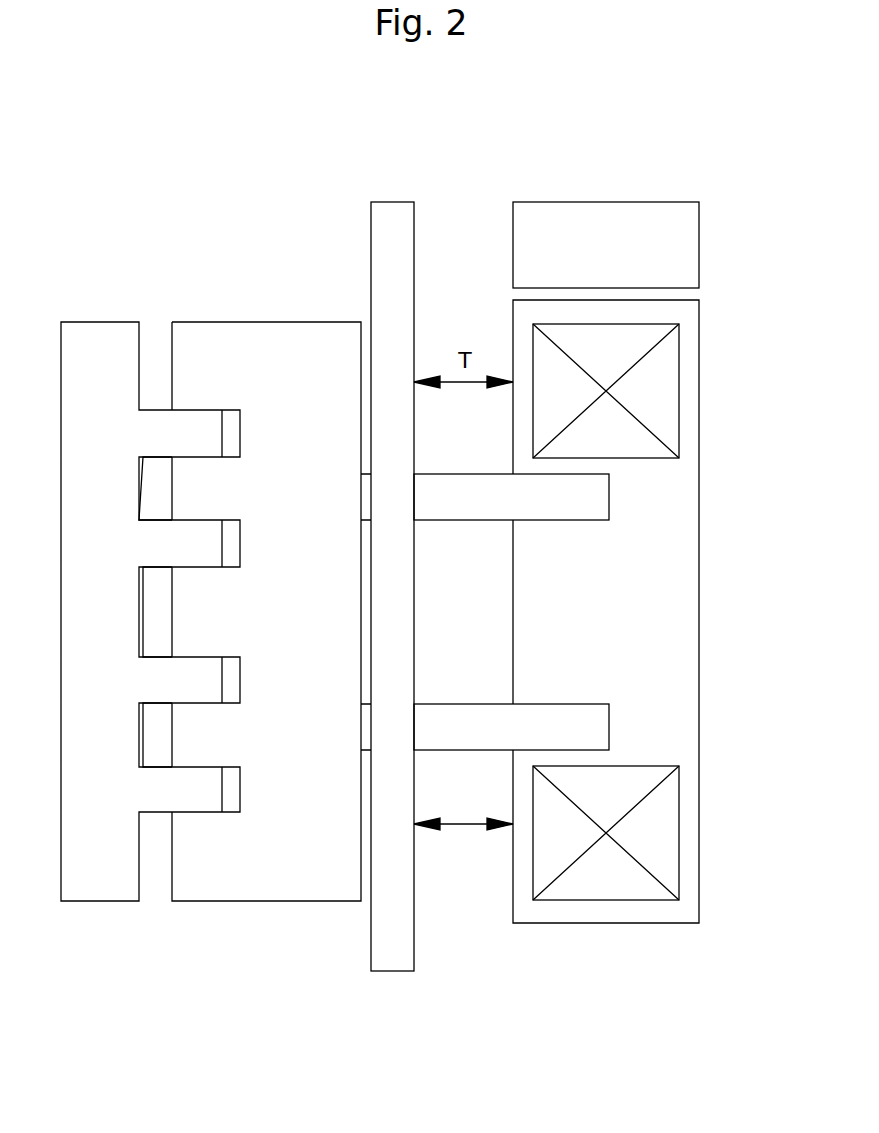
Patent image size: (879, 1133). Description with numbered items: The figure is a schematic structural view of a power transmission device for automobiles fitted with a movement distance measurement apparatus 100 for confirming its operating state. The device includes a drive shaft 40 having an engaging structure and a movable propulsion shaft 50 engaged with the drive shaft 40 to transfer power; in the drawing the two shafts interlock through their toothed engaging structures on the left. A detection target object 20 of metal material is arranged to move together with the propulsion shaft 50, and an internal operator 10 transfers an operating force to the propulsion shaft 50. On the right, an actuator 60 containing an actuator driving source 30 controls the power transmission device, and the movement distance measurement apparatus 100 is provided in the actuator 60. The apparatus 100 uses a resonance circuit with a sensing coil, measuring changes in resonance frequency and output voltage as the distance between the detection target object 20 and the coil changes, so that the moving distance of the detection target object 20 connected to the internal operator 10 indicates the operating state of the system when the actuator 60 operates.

The internal operator 10 is at (596, 502).
The detection target object 20 is at (395, 210).
The actuator driving source 30 is at (665, 400).
The drive shaft 40 is at (97, 327).
The propulsion shaft 50 is at (254, 327).
The actuator 60 is at (699, 348).
The movement distance measurement apparatus 100 is at (597, 210).